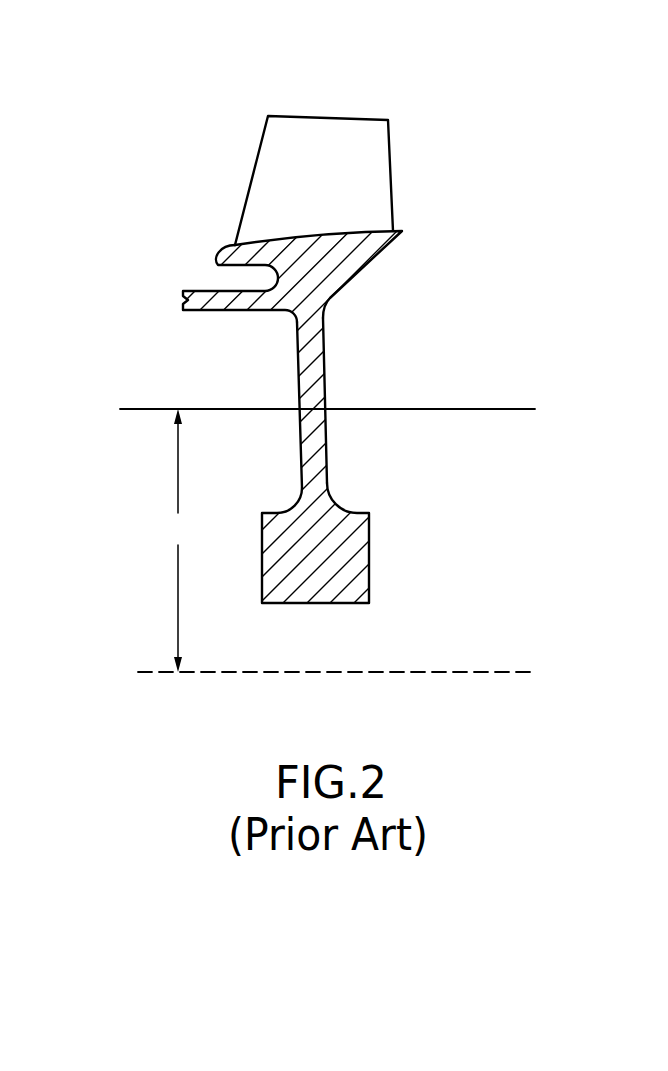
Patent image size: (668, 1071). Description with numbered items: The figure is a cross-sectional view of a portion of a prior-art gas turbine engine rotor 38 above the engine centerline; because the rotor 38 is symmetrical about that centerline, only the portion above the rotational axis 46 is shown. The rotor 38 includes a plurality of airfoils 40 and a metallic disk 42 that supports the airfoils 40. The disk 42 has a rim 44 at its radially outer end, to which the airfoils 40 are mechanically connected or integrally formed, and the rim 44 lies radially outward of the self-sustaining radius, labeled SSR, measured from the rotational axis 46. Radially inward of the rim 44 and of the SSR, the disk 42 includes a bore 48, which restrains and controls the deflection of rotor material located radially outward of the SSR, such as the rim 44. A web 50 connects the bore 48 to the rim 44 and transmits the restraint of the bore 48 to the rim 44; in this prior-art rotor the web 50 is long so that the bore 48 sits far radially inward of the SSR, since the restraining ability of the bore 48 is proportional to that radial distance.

The gas turbine engine rotor 38 is at (436, 77).
The airfoils 40 is at (265, 168).
The disk 42 is at (441, 304).
The rim 44 is at (397, 237).
The rotational axis 46 is at (413, 672).
The bore 48 is at (355, 540).
The web 50 is at (317, 381).